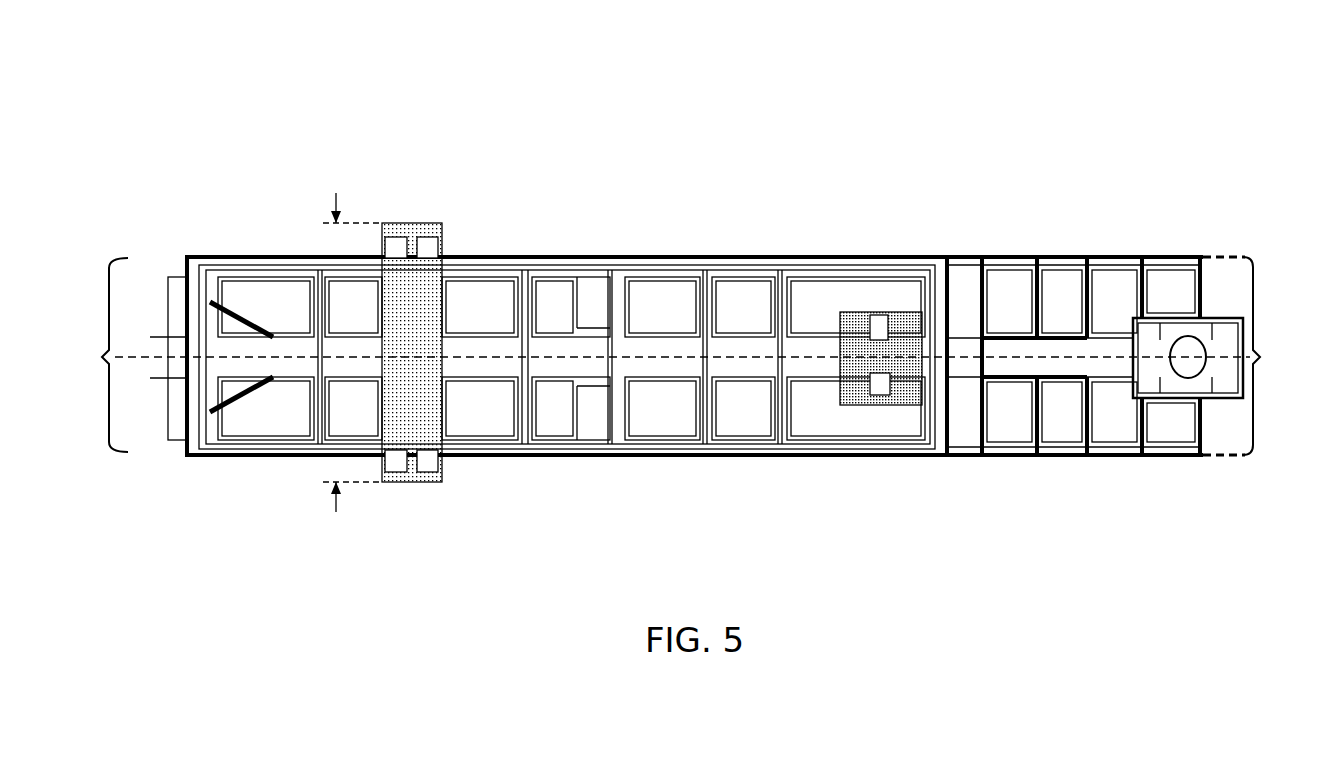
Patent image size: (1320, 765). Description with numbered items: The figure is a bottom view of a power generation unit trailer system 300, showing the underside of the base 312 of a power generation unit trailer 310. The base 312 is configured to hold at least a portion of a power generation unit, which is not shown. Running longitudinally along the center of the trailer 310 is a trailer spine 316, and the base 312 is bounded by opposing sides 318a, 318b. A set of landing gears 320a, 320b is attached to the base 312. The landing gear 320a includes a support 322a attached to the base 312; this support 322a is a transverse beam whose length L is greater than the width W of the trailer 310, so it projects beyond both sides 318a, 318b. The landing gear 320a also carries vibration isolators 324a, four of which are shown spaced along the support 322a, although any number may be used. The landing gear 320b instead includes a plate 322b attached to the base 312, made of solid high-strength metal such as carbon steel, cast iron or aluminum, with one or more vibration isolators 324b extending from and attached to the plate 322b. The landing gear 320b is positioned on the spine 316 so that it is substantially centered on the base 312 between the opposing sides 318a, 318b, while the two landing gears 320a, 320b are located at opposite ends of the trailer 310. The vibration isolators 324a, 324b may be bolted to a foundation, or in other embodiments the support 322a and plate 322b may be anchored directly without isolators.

The power generation unit trailer system 300 is at (932, 92).
The power generation unit trailer 310 is at (775, 222).
The base 312 is at (102, 357).
The trailer spine 316 is at (800, 372).
The side 318a is at (595, 458).
The side 318b is at (578, 256).
The landing gear 320a is at (425, 492).
The landing gear 320b is at (863, 420).
The support 322a is at (428, 440).
The plate 322b is at (908, 318).
The vibration isolators 324a is at (428, 242).
The vibration isolators 324b is at (884, 380).